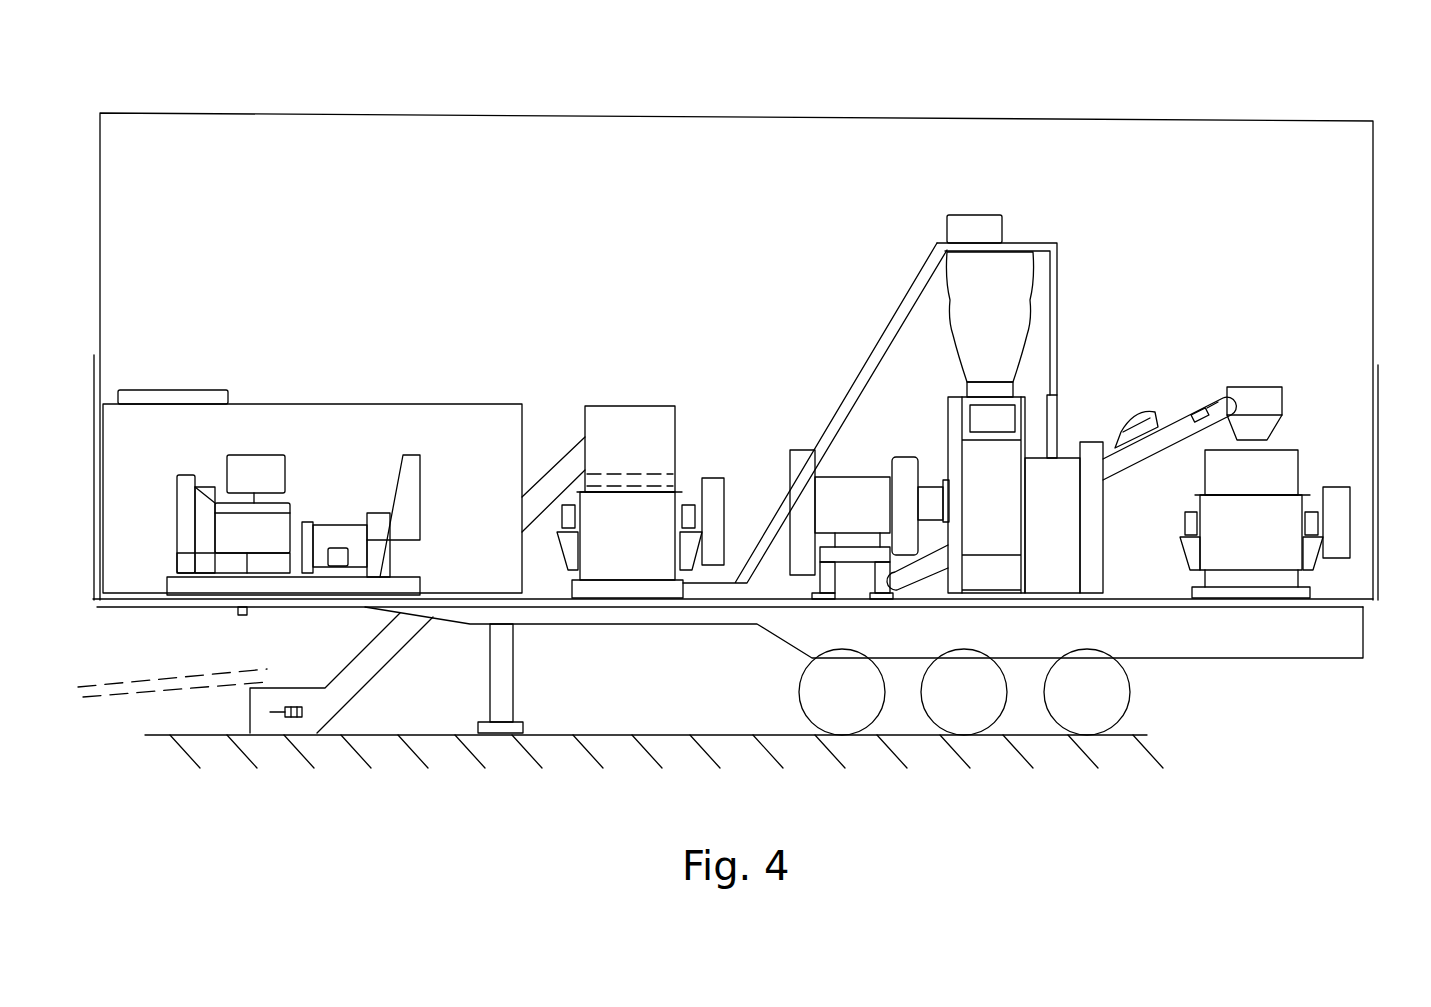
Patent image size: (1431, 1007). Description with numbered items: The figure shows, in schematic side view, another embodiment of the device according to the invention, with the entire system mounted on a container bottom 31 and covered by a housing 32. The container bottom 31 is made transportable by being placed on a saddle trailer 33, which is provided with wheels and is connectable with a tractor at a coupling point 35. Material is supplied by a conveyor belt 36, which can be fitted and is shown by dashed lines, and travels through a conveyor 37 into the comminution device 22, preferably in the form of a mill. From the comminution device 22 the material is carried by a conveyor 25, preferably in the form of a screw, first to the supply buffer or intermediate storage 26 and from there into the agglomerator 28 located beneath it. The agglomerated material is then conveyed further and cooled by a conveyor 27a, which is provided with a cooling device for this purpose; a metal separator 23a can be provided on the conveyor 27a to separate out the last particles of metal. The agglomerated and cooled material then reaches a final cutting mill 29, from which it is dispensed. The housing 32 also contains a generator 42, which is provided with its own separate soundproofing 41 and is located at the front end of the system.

The comminution device 22 is at (610, 418).
The metal separator 23a is at (1127, 422).
The conveyor 25 is at (852, 390).
The supply buffer or intermediate storage 26 is at (1010, 270).
The conveyor 27a is at (1177, 428).
The agglomerator 28 is at (1013, 452).
The final cutting mill 29 is at (1290, 466).
The container bottom 31 is at (660, 603).
The housing 32 is at (1057, 120).
The saddle trailer 33 is at (1218, 668).
The tractor connection 35 is at (238, 616).
The conveyor belt 36 is at (148, 688).
The conveyor 37 is at (388, 650).
The soundproofing 41 is at (258, 404).
The generator 42 is at (158, 440).